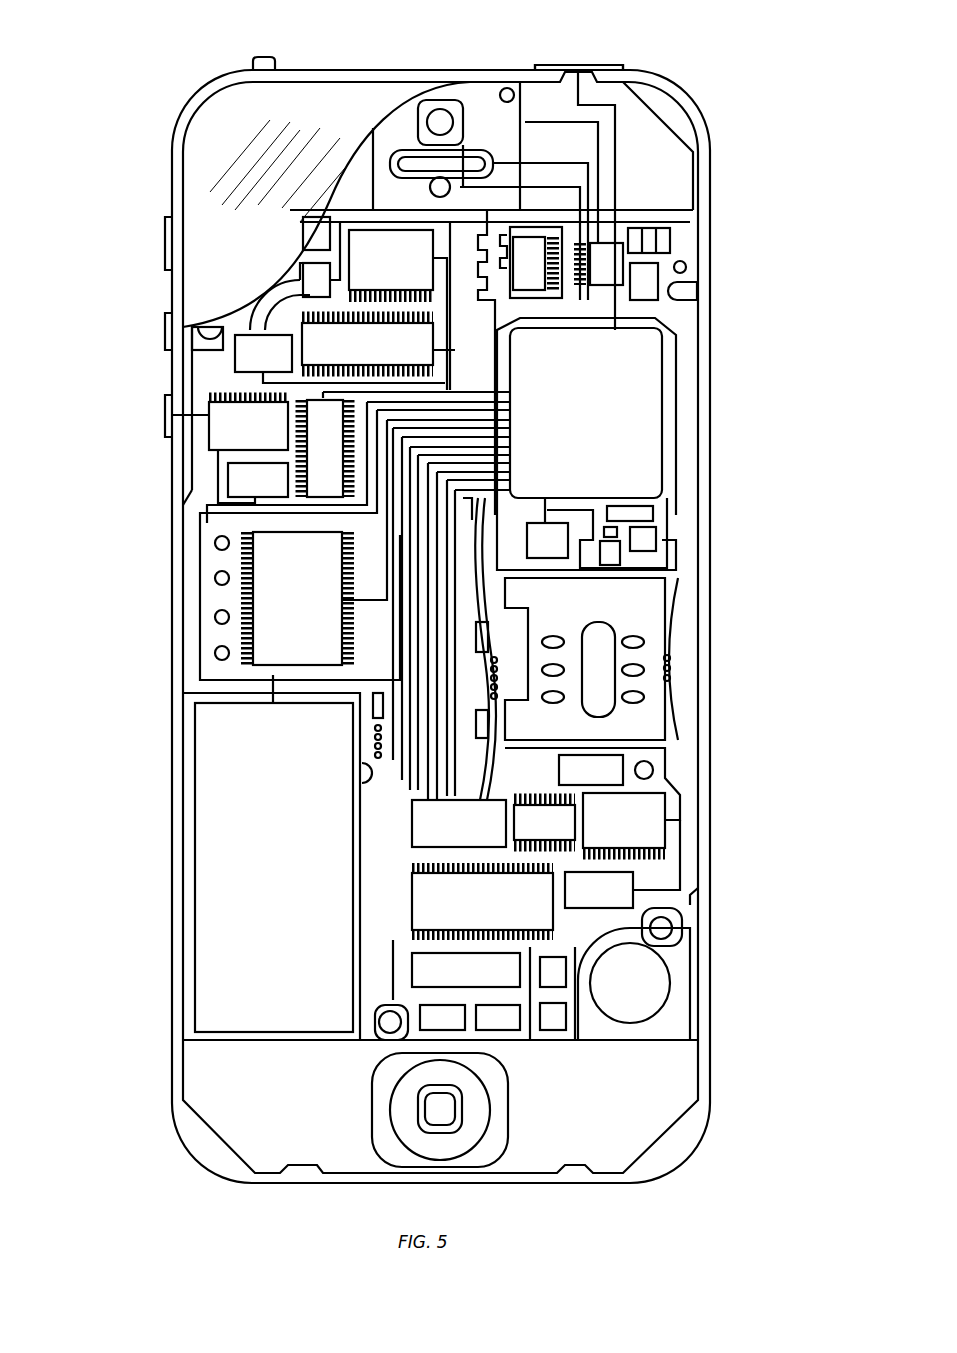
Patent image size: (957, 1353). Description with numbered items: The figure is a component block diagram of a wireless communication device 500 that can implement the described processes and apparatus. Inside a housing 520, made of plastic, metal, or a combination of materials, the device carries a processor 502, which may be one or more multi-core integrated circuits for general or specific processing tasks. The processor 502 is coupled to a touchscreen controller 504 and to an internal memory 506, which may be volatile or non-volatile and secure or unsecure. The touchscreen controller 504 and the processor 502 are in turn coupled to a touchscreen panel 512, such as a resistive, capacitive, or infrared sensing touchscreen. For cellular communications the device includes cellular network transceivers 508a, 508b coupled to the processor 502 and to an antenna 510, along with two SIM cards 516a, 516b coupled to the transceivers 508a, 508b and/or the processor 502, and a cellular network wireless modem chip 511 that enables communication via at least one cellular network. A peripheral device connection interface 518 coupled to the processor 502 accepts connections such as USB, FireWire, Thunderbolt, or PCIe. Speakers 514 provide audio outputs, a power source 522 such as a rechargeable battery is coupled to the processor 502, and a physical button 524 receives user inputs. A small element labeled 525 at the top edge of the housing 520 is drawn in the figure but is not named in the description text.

The wireless communication device 500 is at (130, 62).
The processor 502 is at (586, 416).
The touchscreen controller 504 is at (376, 303).
The internal memory 506 is at (281, 598).
The cellular network transceiver 508a is at (610, 242).
The cellular network transceiver 508b is at (325, 448).
The antenna 510 is at (652, 288).
The cellular network wireless modem chip 511 is at (482, 901).
The touchscreen panel 512 is at (210, 165).
The speakers 514 is at (395, 150).
The SIM card 516a is at (592, 784).
The SIM card 516b is at (622, 864).
The peripheral device connection interface 518 is at (466, 970).
The housing 520 is at (708, 1062).
The power source 522 is at (271, 857).
The physical button 524 is at (447, 1118).
The power button 525 is at (580, 63).